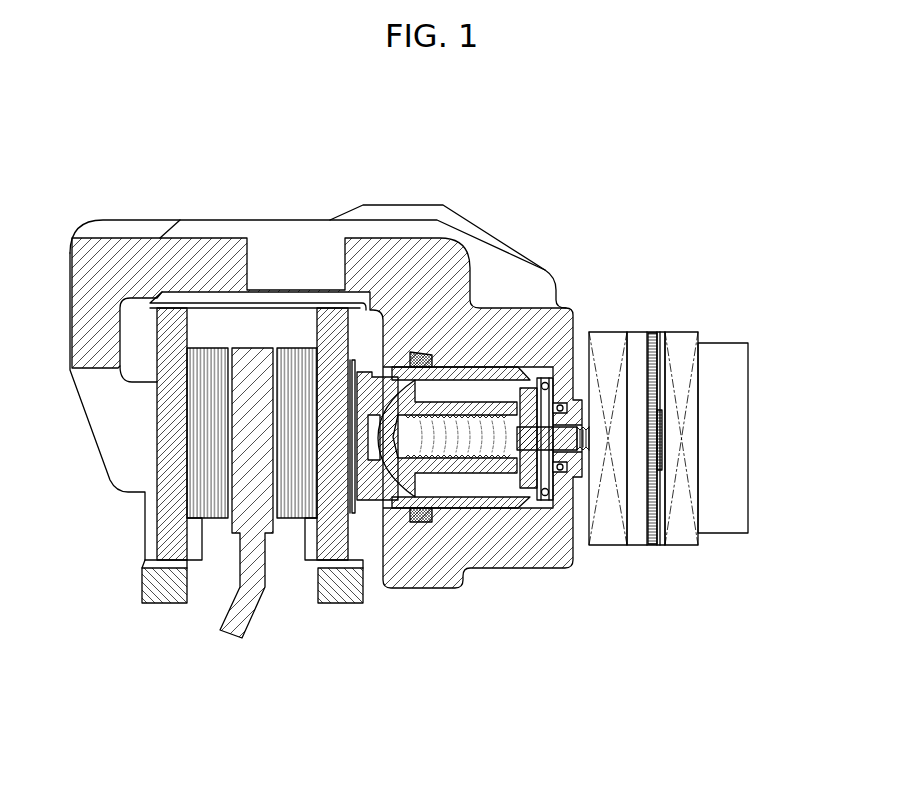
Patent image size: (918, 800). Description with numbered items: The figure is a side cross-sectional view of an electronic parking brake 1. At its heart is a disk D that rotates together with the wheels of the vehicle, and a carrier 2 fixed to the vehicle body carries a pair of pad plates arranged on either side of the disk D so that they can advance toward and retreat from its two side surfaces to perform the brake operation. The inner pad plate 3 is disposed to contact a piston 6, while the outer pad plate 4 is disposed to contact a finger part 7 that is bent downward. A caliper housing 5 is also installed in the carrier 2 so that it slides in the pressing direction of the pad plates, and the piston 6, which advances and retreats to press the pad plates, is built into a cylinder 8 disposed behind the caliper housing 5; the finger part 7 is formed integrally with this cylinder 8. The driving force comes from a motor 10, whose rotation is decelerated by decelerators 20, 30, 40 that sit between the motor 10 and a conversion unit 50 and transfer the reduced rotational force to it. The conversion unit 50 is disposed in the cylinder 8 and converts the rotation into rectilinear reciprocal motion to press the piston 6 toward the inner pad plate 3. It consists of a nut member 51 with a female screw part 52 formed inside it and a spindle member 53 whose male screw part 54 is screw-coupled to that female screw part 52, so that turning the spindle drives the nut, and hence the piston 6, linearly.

The electronic parking brake 1 is at (535, 207).
The carrier 2 is at (160, 605).
The inner pad plate 3 is at (313, 560).
The outer pad plate 4 is at (167, 537).
The caliper housing 5 is at (404, 206).
The piston 6 is at (365, 510).
The finger part 7 is at (100, 432).
The cylinder 8 is at (537, 320).
The motor 10 is at (740, 388).
The decelerator 20 is at (690, 340).
The decelerator 30 is at (650, 334).
The decelerator 40 is at (608, 330).
The conversion unit 50 is at (497, 650).
The nut member 51 is at (421, 525).
The female screw part 52 is at (422, 410).
The spindle member 53 is at (493, 475).
The male screw part 54 is at (477, 405).
The disk D is at (247, 617).